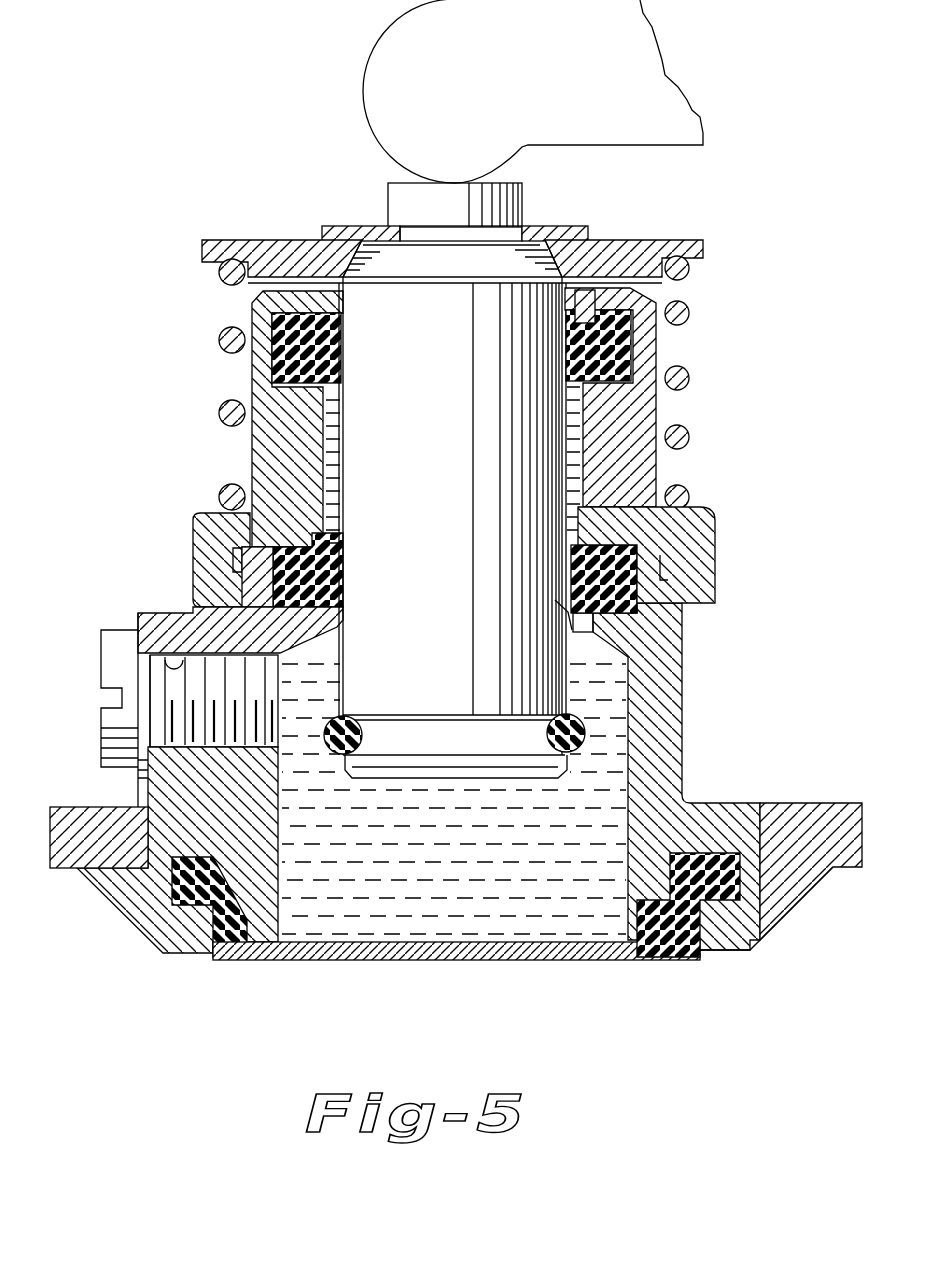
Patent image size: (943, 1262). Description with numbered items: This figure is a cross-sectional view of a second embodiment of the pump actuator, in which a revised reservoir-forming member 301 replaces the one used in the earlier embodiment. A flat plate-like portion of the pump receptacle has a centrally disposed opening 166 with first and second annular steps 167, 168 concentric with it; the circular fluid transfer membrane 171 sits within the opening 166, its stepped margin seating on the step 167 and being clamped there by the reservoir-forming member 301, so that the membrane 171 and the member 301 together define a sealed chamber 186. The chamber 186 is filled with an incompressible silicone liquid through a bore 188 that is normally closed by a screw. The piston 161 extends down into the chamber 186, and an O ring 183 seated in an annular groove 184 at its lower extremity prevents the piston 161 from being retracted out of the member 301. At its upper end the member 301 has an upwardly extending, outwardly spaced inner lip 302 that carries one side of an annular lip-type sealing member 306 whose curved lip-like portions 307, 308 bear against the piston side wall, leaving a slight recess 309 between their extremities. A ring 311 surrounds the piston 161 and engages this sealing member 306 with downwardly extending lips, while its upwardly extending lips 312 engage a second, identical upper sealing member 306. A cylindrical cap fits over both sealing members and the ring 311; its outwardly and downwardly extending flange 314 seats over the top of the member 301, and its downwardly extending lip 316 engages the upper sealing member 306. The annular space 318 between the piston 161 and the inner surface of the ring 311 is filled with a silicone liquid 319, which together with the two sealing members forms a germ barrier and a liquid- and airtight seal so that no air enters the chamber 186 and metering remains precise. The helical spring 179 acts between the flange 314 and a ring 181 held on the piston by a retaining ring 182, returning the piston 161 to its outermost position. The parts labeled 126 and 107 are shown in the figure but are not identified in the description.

The cam boss 126 is at (385, 98).
The retaining ring 182 is at (578, 232).
The ring 181 is at (636, 245).
The helical spring 179 is at (690, 312).
The downwardly extending lip 316 is at (590, 308).
The annular lip-type sealing member 306 is at (640, 345).
The annular space 318 is at (575, 412).
The ring 311 is at (290, 432).
The upwardly extending lips 312 is at (335, 400).
The liquid 319 is at (332, 470).
The recess 309 is at (232, 560).
The valve body 107 is at (180, 668).
The bore 188 is at (115, 672).
The piston 161 is at (447, 569).
The annular lip-like portion 308 is at (562, 607).
The inner lip 302 is at (562, 640).
The annular lip-like portion 307 is at (582, 540).
The flange 314 is at (710, 590).
The reservoir-forming member 301 is at (682, 672).
The O ring 183 is at (590, 723).
The annular groove 184 is at (383, 750).
The second annular step 168 is at (750, 830).
The first annular step 167 is at (742, 900).
The opening 166 is at (700, 960).
The fluid transfer membrane 171 is at (470, 960).
The chamber 186 is at (275, 895).